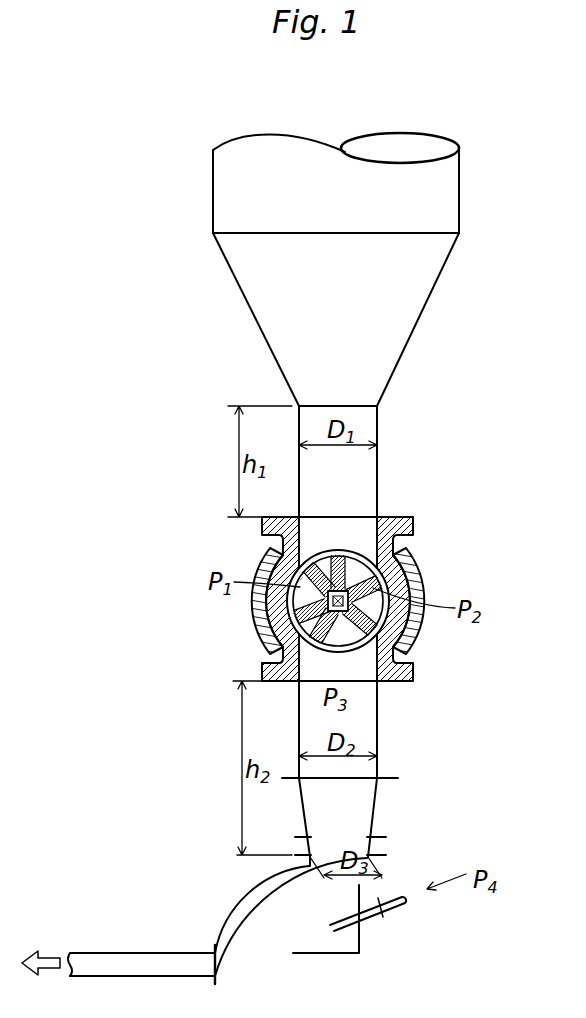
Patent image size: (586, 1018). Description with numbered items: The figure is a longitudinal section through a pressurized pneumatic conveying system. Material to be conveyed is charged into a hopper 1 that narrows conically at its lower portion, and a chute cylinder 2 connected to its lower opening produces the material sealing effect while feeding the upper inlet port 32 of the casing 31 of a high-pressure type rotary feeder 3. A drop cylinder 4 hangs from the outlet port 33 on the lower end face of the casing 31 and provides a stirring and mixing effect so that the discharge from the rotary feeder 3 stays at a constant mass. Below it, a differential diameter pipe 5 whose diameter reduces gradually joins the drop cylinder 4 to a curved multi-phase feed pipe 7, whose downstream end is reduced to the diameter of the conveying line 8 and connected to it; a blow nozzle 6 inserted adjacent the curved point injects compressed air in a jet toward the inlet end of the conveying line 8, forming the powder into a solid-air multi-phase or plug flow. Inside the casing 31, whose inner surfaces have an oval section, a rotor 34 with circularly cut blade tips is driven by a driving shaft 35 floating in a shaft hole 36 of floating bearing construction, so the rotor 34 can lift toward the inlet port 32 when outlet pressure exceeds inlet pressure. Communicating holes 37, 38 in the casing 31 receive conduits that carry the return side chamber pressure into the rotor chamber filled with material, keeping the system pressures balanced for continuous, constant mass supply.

The hopper 1 is at (459, 188).
The chute cylinder 2 is at (377, 424).
The high-pressure type rotary feeder 3 is at (424, 536).
The drop cylinder 4 is at (378, 723).
The differential diameter pipe 5 is at (378, 802).
The blow nozzle 6 is at (370, 918).
The multi-phase feed pipe 7 is at (287, 950).
The conveying line 8 is at (147, 952).
The casing 31 is at (397, 549).
The inlet port 32 is at (352, 525).
The outlet port 33 is at (348, 681).
The rotor 34 is at (297, 623).
The driving shaft 35 is at (313, 608).
The shaft hole 36 is at (385, 623).
The communicating hole 37 is at (400, 570).
The communicating hole 38 is at (300, 580).